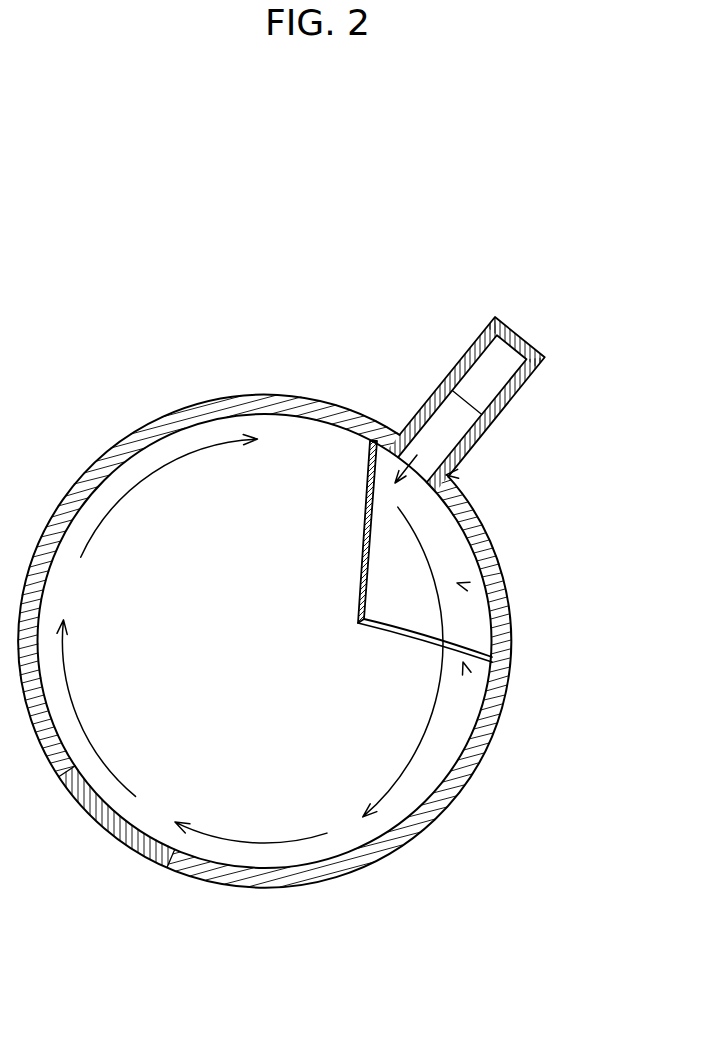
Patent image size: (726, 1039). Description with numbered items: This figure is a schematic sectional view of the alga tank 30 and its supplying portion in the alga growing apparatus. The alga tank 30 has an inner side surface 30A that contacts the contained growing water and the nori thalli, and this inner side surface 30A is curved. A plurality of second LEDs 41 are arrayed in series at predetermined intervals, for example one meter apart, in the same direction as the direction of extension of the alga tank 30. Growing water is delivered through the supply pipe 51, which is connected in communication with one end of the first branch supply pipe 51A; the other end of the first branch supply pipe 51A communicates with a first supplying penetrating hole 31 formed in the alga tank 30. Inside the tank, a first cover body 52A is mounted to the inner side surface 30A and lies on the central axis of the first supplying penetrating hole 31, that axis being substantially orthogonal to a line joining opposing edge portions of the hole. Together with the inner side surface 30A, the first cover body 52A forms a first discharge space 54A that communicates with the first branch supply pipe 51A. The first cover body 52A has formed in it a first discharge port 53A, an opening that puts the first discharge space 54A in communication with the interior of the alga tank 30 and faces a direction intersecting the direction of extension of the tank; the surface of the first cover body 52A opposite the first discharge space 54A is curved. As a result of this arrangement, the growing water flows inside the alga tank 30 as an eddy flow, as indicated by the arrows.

The alga tank 30 is at (214, 397).
The inner side surface 30A is at (353, 848).
The second LEDs 41 is at (103, 825).
The supply pipe 51 is at (516, 332).
The first branch supply pipe 51A is at (422, 400).
The first supplying penetrating hole 31 is at (446, 475).
The first cover body 52A is at (362, 546).
The first discharge port 53A is at (463, 665).
The first discharge space 54A is at (475, 588).